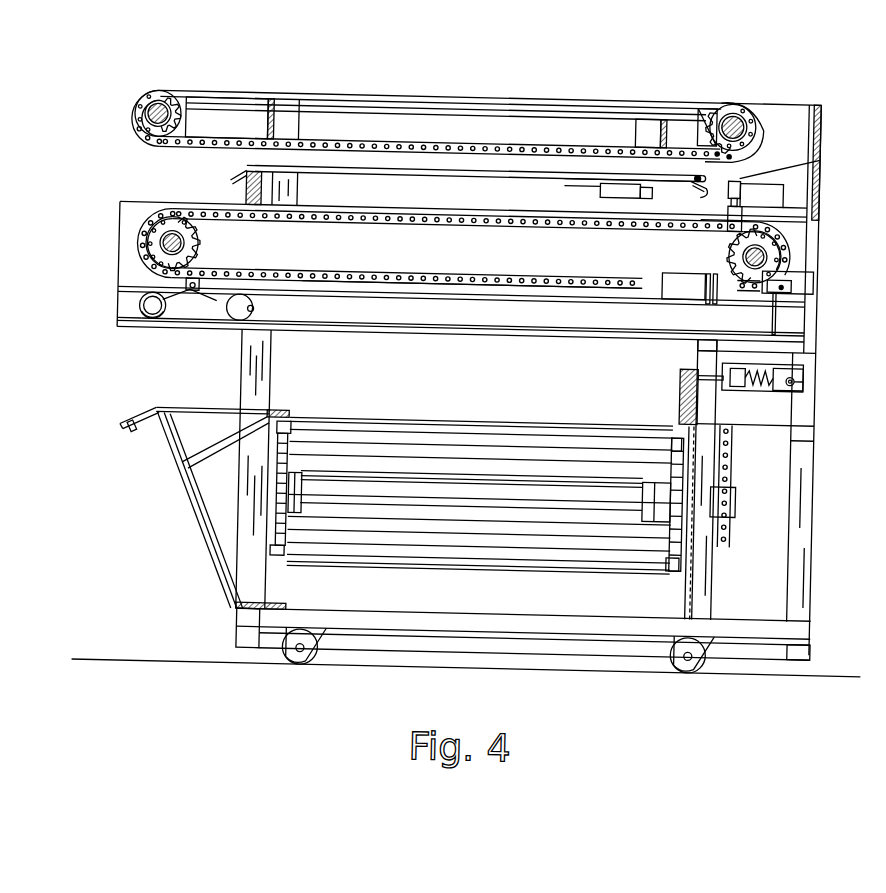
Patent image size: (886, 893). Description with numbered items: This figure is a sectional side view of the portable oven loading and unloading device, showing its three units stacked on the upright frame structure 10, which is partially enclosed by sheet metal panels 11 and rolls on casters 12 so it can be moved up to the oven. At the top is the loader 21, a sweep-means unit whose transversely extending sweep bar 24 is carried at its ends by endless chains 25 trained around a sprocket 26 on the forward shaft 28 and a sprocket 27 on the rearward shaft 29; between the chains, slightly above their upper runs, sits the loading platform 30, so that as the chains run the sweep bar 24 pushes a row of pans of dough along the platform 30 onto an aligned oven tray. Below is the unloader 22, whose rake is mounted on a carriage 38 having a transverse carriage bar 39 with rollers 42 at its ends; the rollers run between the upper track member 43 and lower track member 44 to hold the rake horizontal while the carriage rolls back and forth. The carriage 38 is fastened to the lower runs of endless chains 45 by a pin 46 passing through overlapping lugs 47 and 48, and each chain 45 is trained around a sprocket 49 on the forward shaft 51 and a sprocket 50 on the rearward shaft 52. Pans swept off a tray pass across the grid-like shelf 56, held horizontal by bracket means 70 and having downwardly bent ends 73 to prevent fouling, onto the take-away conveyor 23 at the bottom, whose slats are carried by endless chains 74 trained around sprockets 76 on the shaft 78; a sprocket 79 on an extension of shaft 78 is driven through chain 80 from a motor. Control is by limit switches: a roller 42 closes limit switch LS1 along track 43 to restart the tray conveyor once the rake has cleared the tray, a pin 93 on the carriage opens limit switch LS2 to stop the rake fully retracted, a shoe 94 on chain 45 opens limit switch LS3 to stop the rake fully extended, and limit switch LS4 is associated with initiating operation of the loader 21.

The frame structure 10 is at (240, 383).
The sheet metal panels 11 is at (817, 565).
The casters 12 is at (316, 660).
The loader 21 is at (421, 139).
The unloader 22 is at (516, 262).
The take-away conveyor 23 is at (475, 415).
The sweep bar 24 is at (696, 187).
The endless chains 25 is at (472, 149).
The sprocket 26 is at (699, 129).
The sprocket 27 is at (159, 99).
The shaft 28 is at (731, 116).
The shaft 29 is at (169, 99).
The loading platform 30 is at (393, 89).
The carriage 38 is at (179, 326).
The carriage bar 39 is at (147, 327).
The rollers 42 is at (140, 316).
The upper track member 43 is at (125, 297).
The lower track member 44 is at (124, 334).
The endless chains 45 is at (425, 286).
The pin 46 is at (190, 294).
The lug 47 is at (168, 284).
The lug 48 is at (201, 300).
The sprocket 49 is at (767, 240).
The sprocket 50 is at (157, 239).
The shaft 51 is at (762, 250).
The shaft 52 is at (160, 249).
The grid-like shelf 56 is at (121, 434).
The bracket means 70 is at (203, 528).
The downwardly bent ends 73 is at (141, 420).
The endless chains 74 is at (286, 564).
The sprocket 76 is at (300, 516).
The shaft 78 is at (481, 506).
The sprocket 79 is at (720, 503).
The chain 80 is at (733, 457).
The pin 93 is at (252, 314).
The shoe 94 is at (796, 209).
The limit switch LS1 is at (690, 294).
The limit switch LS2 is at (800, 278).
The limit switch LS3 is at (779, 187).
The limit switch LS4 is at (596, 187).